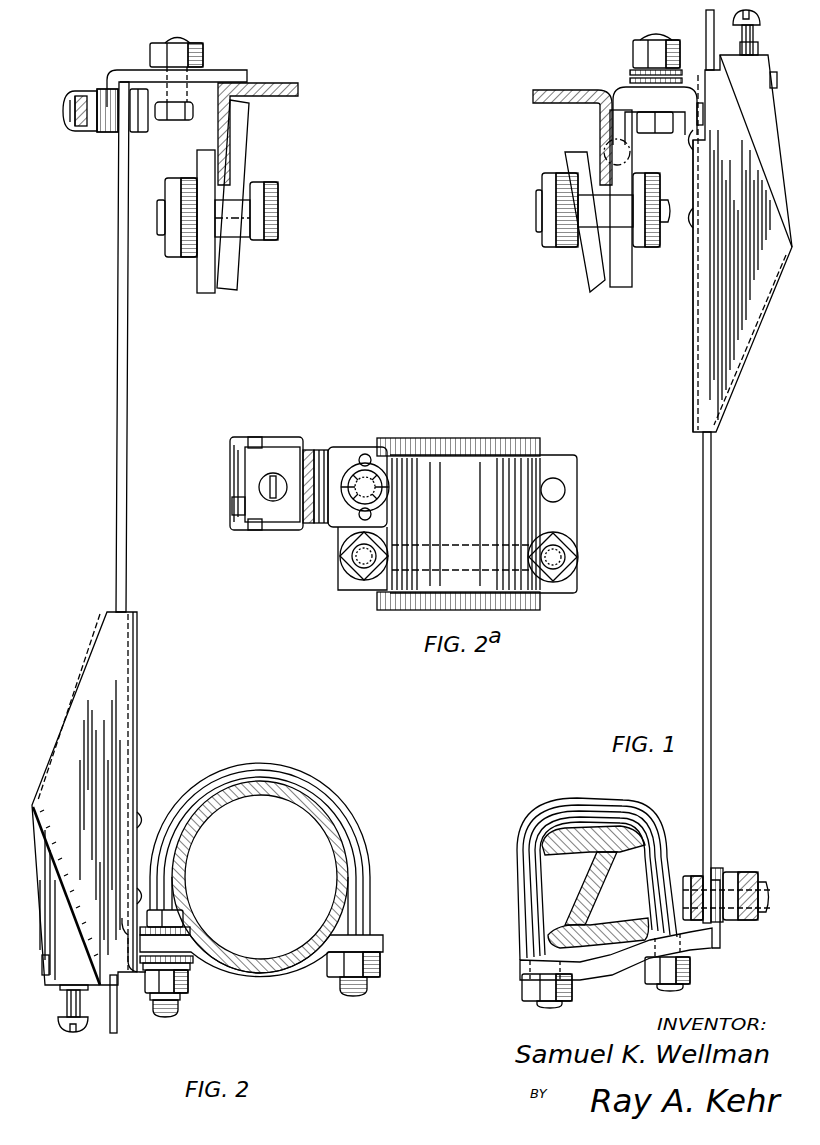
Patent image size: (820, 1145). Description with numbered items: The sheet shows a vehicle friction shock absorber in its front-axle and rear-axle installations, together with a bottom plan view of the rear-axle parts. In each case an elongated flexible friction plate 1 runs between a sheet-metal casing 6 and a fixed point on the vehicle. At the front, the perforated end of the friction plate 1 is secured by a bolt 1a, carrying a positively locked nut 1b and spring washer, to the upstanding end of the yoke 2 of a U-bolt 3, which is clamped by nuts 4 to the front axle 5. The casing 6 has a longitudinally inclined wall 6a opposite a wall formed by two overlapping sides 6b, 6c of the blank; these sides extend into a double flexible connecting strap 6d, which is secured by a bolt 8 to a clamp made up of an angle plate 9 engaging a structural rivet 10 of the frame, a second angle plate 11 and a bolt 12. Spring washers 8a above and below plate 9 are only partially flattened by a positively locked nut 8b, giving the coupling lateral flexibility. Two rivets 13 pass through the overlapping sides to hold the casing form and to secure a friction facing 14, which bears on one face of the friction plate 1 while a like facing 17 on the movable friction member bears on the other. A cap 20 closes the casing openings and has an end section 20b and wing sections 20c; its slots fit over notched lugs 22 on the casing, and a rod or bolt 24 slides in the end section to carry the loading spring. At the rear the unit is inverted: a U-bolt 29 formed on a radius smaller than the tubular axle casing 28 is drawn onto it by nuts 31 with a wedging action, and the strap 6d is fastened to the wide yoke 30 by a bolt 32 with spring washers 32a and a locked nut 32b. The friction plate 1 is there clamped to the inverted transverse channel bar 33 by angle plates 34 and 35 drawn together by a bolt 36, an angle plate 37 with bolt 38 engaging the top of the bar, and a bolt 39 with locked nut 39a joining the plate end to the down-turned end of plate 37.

In FIG. 2, the friction plate 1 is at (117, 410).
In FIG. 2A, the friction plate 1 is at (309, 450).
In FIG. 1, the friction plate 1 is at (712, 676).
In FIG. 1, the bolt 1a is at (693, 876).
In FIG. 1, the positively locked nut 1b is at (742, 872).
In FIG. 1, the yoke 2 is at (605, 974).
In FIG. 1, the U-bolt 3 is at (550, 813).
In FIG. 1, the nuts 4 is at (522, 990).
In FIG. 1, the front axle 5 is at (604, 832).
In FIG. 2, the casing 6 is at (120, 704).
In FIG. 1, the casing 6 is at (745, 312).
In FIG. 2, the inclined wall 6a is at (78, 692).
In FIG. 1, the inclined wall 6a is at (742, 362).
In FIG. 2, the overlapping side 6b is at (137, 749).
In FIG. 1, the overlapping side 6b is at (692, 332).
In FIG. 2, the overlapping side 6c is at (131, 663).
In FIG. 1, the overlapping side 6c is at (696, 368).
In FIG. 2, the double flexible connecting strap 6d is at (118, 993).
In FIG. 2A, the double flexible connecting strap 6d is at (344, 522).
In FIG. 1, the bolt 8 is at (657, 33).
In FIG. 1, the spring washers 8a is at (628, 110).
In FIG. 1, the positively locked nut 8b is at (636, 55).
In FIG. 1, the angle plate 9 is at (621, 287).
In FIG. 1, the structural rivet 10 is at (631, 153).
In FIG. 1, the second angle plate 11 is at (581, 262).
In FIG. 1, the bolt 12 is at (542, 218).
In FIG. 2, the rivets 13 is at (141, 815).
In FIG. 1, the rivets 13 is at (688, 142).
In FIG. 2, the friction facing 14 is at (122, 946).
In FIG. 2A, the friction facing 14 is at (323, 450).
In FIG. 1, the friction facing 14 is at (703, 116).
In FIG. 2A, the friction facing 17 is at (299, 468).
In FIG. 2, the cover or cap 20 is at (58, 886).
In FIG. 2A, the cover or cap 20 is at (230, 464).
In FIG. 1, the cover or cap 20 is at (777, 188).
In FIG. 2, the end section 20b is at (64, 992).
In FIG. 2A, the end section 20b is at (234, 502).
In FIG. 1, the end section 20b is at (758, 60).
In FIG. 2, the wing sections 20c is at (45, 857).
In FIG. 1, the wing sections 20c is at (756, 143).
In FIG. 2, the notched lugs 22 is at (45, 976).
In FIG. 2A, the notched lugs 22 is at (258, 440).
In FIG. 1, the notched lugs 22 is at (777, 84).
In FIG. 2, the rod or bolt 24 is at (80, 1030).
In FIG. 2A, the rod or bolt 24 is at (259, 487).
In FIG. 1, the rod or bolt 24 is at (758, 30).
In FIG. 2, the axle casing 28 is at (333, 830).
In FIG. 2A, the axle casing 28 is at (542, 609).
In FIG. 2, the U-bolt 29 is at (278, 766).
In FIG. 2A, the U-bolt 29 is at (453, 545).
In FIG. 2, the yoke 30 is at (275, 978).
In FIG. 2A, the yoke 30 is at (487, 465).
In FIG. 2, the nuts 31 is at (382, 968).
In FIG. 2A, the nuts 31 is at (350, 566).
In FIG. 2, the bolt 32 is at (180, 1013).
In FIG. 2A, the bolt 32 is at (372, 462).
In FIG. 2, the spring washers 32a is at (190, 927).
In FIG. 2, the positively locked nut 32b is at (190, 996).
In FIG. 2A, the positively locked nut 32b is at (376, 486).
In FIG. 2, the transverse channel bar 33 is at (290, 96).
In FIG. 2, the angle plate 34 is at (200, 278).
In FIG. 2, the second angle plate 35 is at (248, 166).
In FIG. 2, the bolt 36 is at (278, 236).
In FIG. 2, the angle plate 37 is at (228, 74).
In FIG. 2, the bolt 38 is at (170, 120).
In FIG. 2, the bolt 39 is at (140, 133).
In FIG. 2, the positively locked nut 39a is at (87, 131).